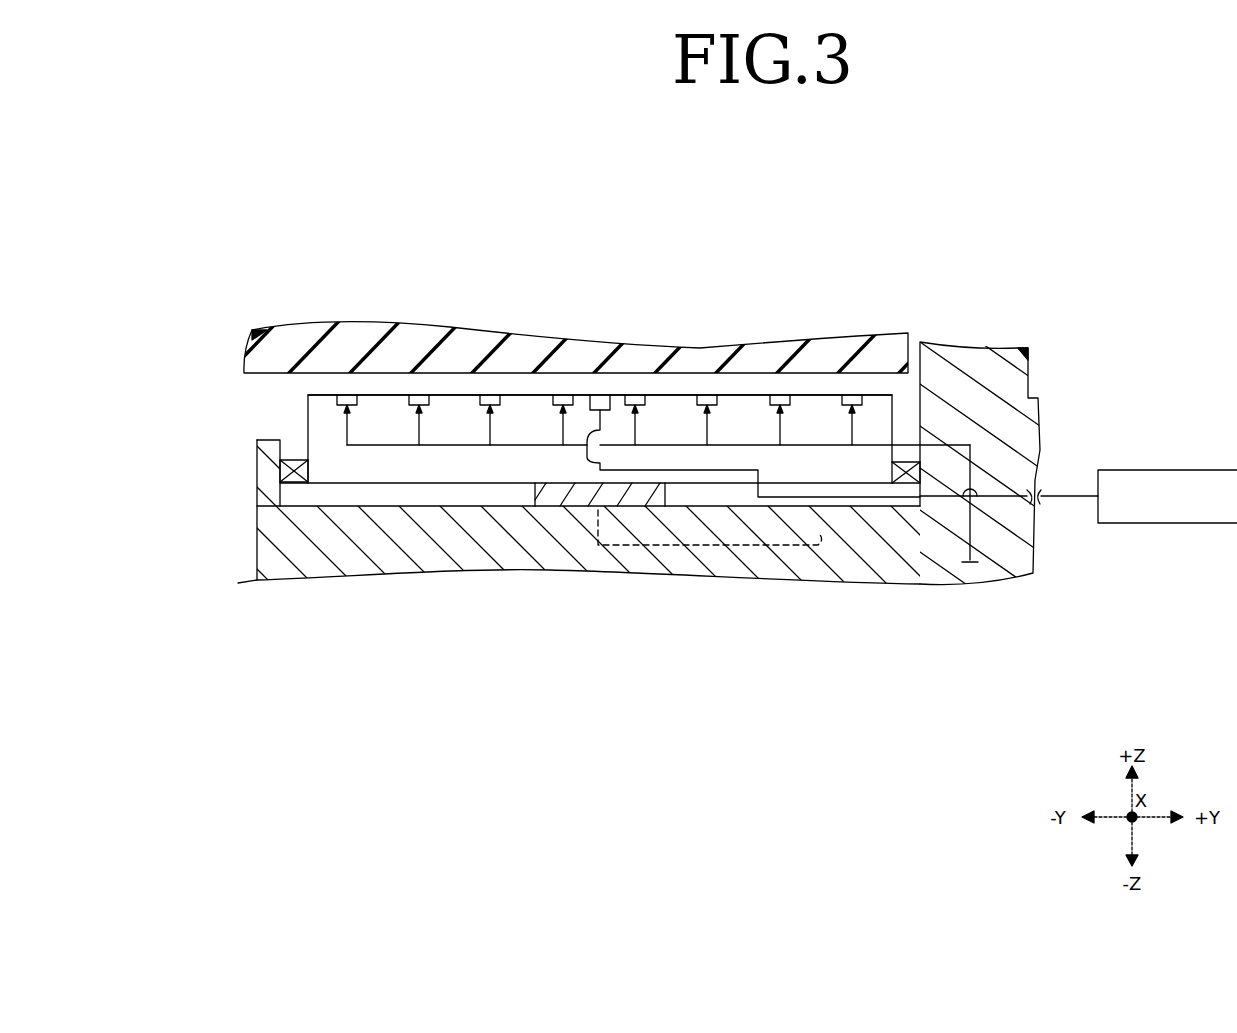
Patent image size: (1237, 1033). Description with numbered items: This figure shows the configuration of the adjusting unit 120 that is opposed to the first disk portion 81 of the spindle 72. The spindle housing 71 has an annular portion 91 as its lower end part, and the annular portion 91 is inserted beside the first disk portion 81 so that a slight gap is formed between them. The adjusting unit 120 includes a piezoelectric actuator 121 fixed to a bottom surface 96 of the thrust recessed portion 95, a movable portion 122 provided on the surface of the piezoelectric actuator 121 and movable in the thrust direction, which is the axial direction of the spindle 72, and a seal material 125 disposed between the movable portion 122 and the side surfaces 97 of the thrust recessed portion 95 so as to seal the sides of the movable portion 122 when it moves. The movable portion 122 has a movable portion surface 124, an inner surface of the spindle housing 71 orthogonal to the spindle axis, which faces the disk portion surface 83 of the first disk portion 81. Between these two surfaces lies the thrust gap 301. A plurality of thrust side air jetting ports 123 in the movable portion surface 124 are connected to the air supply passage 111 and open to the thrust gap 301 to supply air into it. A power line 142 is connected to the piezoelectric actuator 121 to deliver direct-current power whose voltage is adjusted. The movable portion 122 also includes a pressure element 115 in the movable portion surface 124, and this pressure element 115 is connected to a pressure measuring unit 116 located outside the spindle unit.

The adjusting unit 120 is at (262, 397).
The movable portion 122 is at (317, 417).
The thrust side air jetting ports 123 is at (346, 396).
The movable portion surface 124 is at (377, 395).
The pressure element 115 is at (602, 398).
The thrust gap 301 is at (732, 383).
The first disk portion 81 is at (829, 352).
The disk portion surface 83 is at (330, 378).
The spindle 72 is at (892, 305).
The side surfaces 97 is at (287, 447).
The spindle housing 71 is at (1049, 343).
The pressure measuring unit 116 is at (1166, 470).
The seal material 125 is at (292, 468).
The thrust recessed portion 95 is at (298, 494).
The annular portion 91 is at (274, 556).
The bottom surface 96 is at (403, 497).
The piezoelectric actuator 121 is at (578, 487).
The power line 142 is at (710, 548).
The air supply passage 111 is at (972, 538).